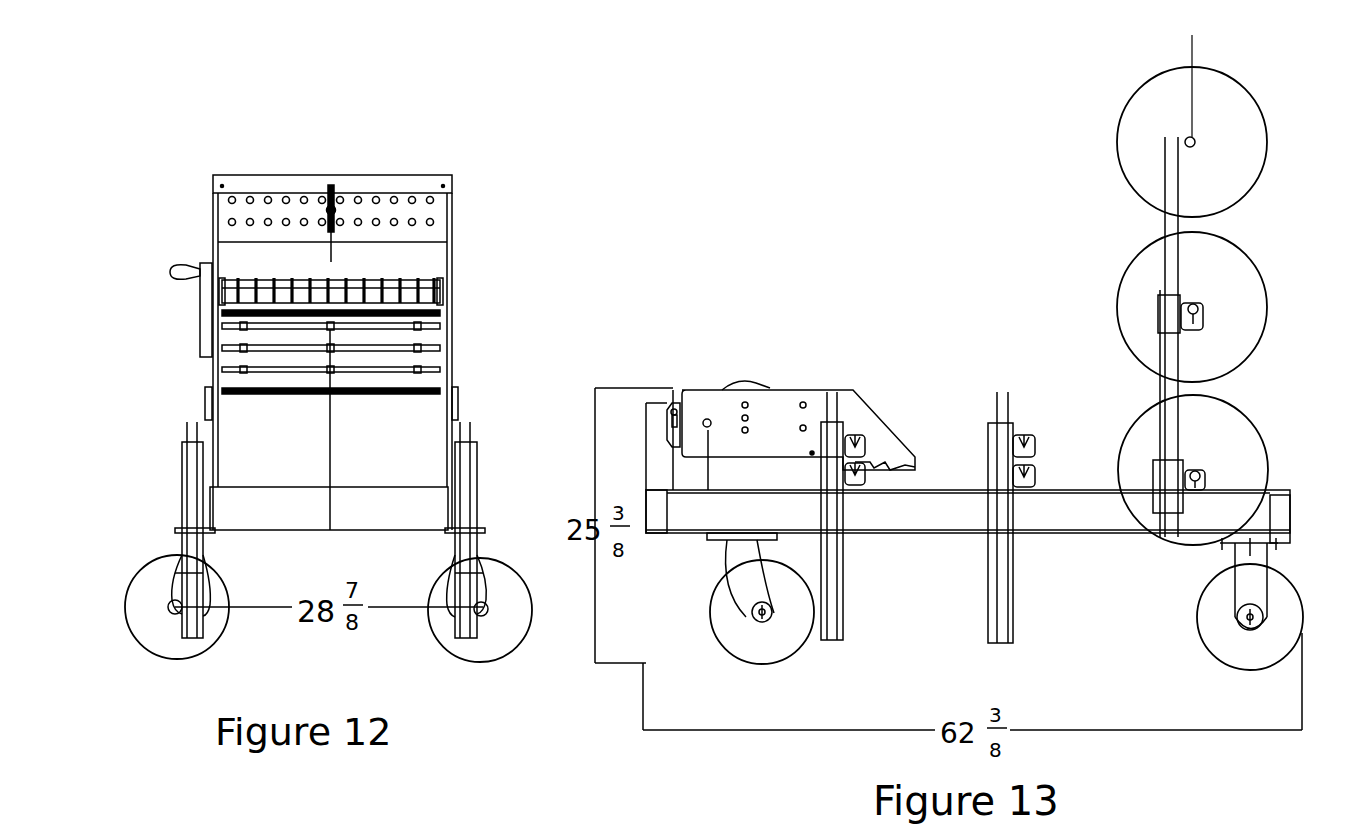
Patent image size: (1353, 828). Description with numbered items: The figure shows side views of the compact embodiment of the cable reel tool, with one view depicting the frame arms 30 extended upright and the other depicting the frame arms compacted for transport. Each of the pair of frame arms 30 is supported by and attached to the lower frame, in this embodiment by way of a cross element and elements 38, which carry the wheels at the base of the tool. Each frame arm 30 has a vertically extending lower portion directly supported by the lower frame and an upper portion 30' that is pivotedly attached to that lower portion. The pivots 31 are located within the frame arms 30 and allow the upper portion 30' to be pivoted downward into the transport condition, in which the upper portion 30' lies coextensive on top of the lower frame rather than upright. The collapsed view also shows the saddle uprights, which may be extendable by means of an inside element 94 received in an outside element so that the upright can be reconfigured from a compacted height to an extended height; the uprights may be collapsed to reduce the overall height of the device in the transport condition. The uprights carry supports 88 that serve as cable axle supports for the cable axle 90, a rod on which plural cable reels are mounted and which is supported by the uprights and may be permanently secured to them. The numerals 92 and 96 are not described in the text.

In FIG. 12, the frame arm 30 is at (248, 352).
In FIG. 13, the frame arm 30 is at (644, 400).
In FIG. 13, the upper portion of the frame arm 30' is at (792, 385).
In FIG. 13, the pivot 31 is at (667, 420).
In FIG. 12, the element 38 is at (182, 515).
In FIG. 13, the support 88 is at (1037, 448).
In FIG. 13, the cable axle 90 is at (1190, 138).
In FIG. 13, the upper roller 92 is at (1267, 130).
In FIG. 13, the inside element 94 is at (1180, 218).
In FIG. 13, the hook bracket 96 is at (1203, 300).